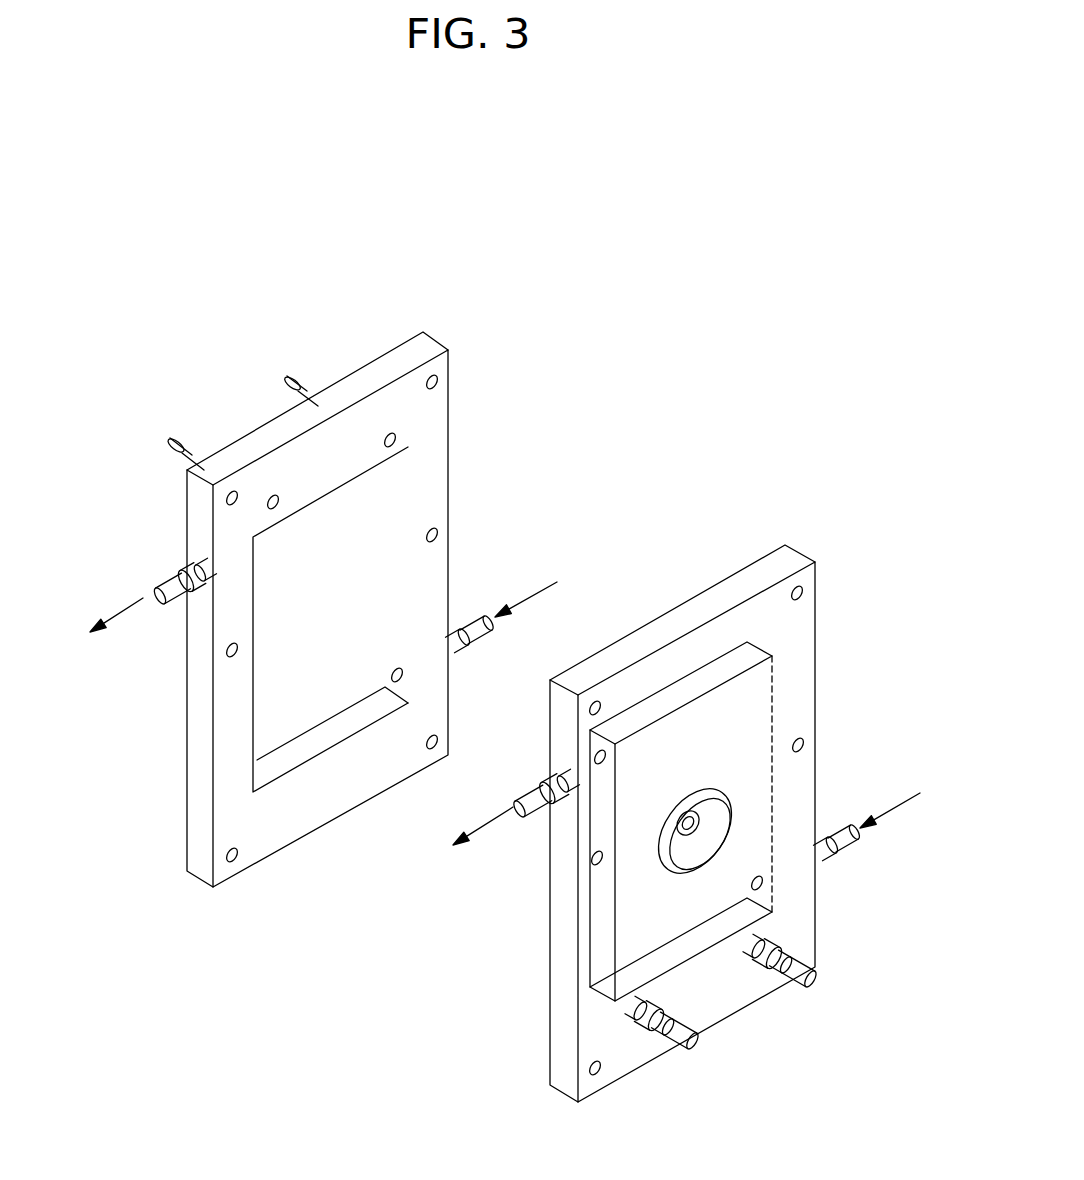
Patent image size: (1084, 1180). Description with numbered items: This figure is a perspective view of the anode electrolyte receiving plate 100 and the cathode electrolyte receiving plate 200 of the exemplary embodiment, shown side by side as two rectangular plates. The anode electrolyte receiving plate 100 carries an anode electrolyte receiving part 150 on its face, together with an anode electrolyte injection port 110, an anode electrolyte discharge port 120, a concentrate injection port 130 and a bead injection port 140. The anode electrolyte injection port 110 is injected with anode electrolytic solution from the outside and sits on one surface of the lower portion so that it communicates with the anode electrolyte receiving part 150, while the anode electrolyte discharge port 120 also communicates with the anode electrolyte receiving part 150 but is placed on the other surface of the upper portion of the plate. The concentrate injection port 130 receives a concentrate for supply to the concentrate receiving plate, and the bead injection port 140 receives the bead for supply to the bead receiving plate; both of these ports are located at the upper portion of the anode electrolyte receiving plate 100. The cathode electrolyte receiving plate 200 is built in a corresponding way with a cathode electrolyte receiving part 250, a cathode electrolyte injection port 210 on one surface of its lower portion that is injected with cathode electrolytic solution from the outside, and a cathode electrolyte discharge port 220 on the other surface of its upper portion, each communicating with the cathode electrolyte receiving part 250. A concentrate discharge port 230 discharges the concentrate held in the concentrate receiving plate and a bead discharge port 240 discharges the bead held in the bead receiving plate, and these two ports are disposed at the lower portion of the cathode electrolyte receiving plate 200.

The anode electrolyte receiving plate 100 is at (357, 337).
The anode electrolyte injection port 110 is at (477, 617).
The anode electrolyte discharge port 120 is at (162, 570).
The concentrate injection port 130 is at (305, 380).
The bead injection port 140 is at (184, 433).
The anode electrolyte receiving part 150 is at (362, 580).
The cathode electrolyte receiving plate 200 is at (789, 522).
The cathode electrolyte injection port 210 is at (833, 873).
The cathode electrolyte discharge port 220 is at (517, 817).
The concentrate discharge port 230 is at (673, 1043).
The bead discharge port 240 is at (793, 993).
The cathode electrolyte receiving part 250 is at (728, 748).